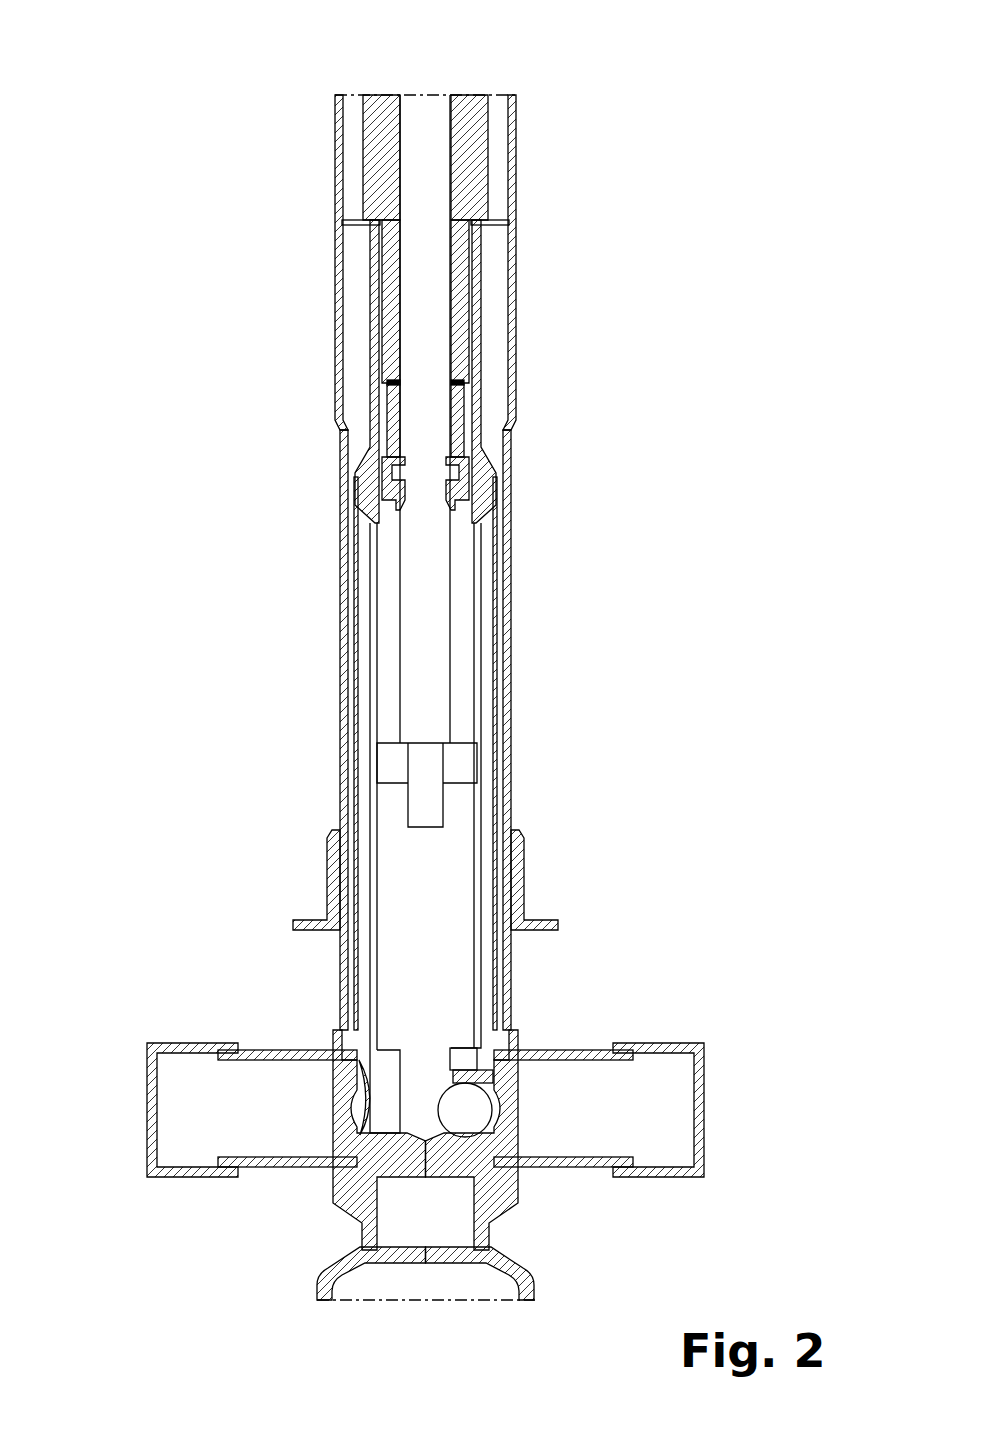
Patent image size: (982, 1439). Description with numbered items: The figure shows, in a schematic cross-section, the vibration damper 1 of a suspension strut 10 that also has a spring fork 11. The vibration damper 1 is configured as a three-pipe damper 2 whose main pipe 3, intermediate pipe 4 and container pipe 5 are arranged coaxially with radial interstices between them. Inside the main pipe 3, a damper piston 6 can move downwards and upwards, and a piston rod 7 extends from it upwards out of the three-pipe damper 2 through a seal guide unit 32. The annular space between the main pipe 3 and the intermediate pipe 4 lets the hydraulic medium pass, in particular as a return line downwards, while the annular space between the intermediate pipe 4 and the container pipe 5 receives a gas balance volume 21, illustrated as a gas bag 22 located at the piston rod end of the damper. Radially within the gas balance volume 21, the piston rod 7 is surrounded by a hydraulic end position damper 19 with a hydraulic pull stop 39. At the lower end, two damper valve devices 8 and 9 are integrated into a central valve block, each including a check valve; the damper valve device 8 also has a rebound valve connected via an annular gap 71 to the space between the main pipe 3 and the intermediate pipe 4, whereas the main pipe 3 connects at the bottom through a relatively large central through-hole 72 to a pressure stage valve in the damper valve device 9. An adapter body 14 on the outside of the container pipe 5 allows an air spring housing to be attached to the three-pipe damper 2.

The vibration damper 1 is at (433, 215).
The three-pipe damper 2 is at (429, 781).
The main pipe 3 is at (482, 825).
The intermediate pipe 4 is at (495, 873).
The container pipe 5 is at (510, 957).
The damper piston 6 is at (473, 765).
The piston rod 7 is at (430, 115).
The damper valve device 8 is at (152, 1022).
The damper valve device 9 is at (705, 1022).
The suspension strut 10 is at (430, 1097).
The spring fork 11 is at (527, 1290).
The adapter body 14 is at (330, 840).
The hydraulic end position damper 19 is at (468, 295).
The gas balance volume 21 is at (362, 278).
The gas bag 22 is at (349, 352).
The seal guide unit 32 is at (485, 190).
The hydraulic pull stop 39 is at (463, 383).
The annular gap 71 is at (360, 1040).
The central through-hole 72 is at (423, 1053).